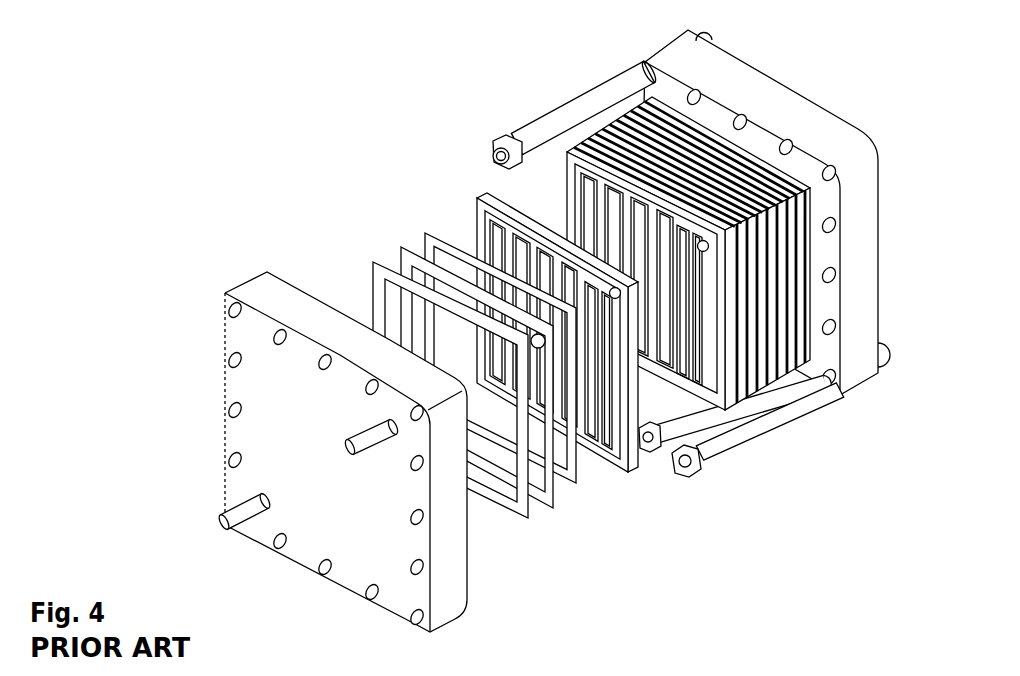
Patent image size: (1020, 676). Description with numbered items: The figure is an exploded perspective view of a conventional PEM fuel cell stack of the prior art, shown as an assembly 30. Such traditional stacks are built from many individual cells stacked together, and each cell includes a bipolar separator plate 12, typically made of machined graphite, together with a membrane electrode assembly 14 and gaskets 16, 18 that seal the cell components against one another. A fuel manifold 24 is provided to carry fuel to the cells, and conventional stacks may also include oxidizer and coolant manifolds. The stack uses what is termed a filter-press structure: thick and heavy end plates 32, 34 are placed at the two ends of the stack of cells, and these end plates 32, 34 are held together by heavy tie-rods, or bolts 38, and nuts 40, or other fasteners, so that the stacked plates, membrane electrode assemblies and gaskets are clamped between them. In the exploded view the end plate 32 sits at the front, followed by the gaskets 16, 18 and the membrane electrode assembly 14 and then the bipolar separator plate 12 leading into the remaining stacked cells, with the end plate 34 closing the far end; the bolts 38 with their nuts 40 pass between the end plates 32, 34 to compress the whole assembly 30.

The heat exchanger assembly (prior art) 30 is at (185, 217).
The bipolar separator plate 12 is at (562, 210).
The membrane electrode assembly 14 is at (430, 283).
The gasket 16 is at (528, 517).
The gasket 18 is at (573, 485).
The fuel manifold 24 is at (622, 297).
The end plate 32 is at (448, 587).
The end plate 34 is at (855, 350).
The tie-rod or bolt 38 is at (573, 112).
The nut 40 is at (508, 142).